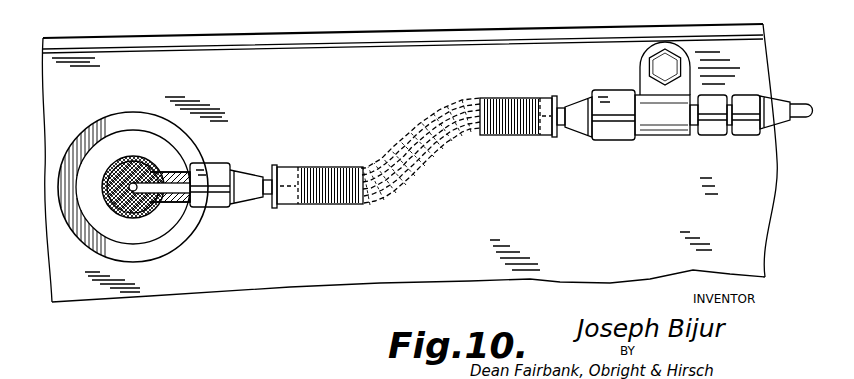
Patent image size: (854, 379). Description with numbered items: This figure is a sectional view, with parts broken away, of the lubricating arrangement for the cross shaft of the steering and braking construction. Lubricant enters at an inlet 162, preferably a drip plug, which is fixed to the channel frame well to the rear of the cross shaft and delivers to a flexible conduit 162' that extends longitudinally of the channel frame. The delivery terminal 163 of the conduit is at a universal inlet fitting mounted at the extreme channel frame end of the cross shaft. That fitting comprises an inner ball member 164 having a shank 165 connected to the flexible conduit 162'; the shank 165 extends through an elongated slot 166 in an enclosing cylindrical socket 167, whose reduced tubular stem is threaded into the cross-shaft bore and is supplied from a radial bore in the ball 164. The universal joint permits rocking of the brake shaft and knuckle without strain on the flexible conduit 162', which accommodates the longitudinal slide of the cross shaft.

The inlet 162 is at (724, 118).
The flexible conduit 162' is at (557, 142).
The delivery terminal 163 is at (245, 167).
The inner ball member 164 is at (118, 158).
The shank 165 is at (173, 205).
The elongated slot 166 is at (157, 168).
The cylindrical socket 167 is at (122, 215).